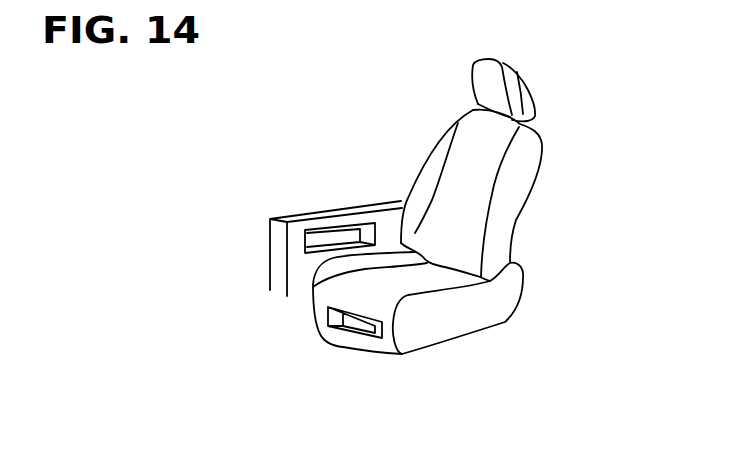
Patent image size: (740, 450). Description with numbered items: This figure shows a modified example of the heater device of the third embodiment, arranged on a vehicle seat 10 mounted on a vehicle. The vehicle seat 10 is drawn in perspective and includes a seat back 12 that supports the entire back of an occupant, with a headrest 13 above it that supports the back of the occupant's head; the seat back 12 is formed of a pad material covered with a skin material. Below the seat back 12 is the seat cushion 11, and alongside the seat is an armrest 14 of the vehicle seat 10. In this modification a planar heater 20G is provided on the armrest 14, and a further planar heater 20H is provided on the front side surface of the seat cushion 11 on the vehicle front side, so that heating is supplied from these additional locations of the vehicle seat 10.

The vehicle seat 10 is at (475, 214).
The seat cushion 11 is at (418, 334).
The seat back 12 is at (515, 222).
The headrest 13 is at (502, 62).
The armrest 14 is at (323, 207).
The planar heater 20G is at (347, 232).
The planar heater 20H is at (358, 323).